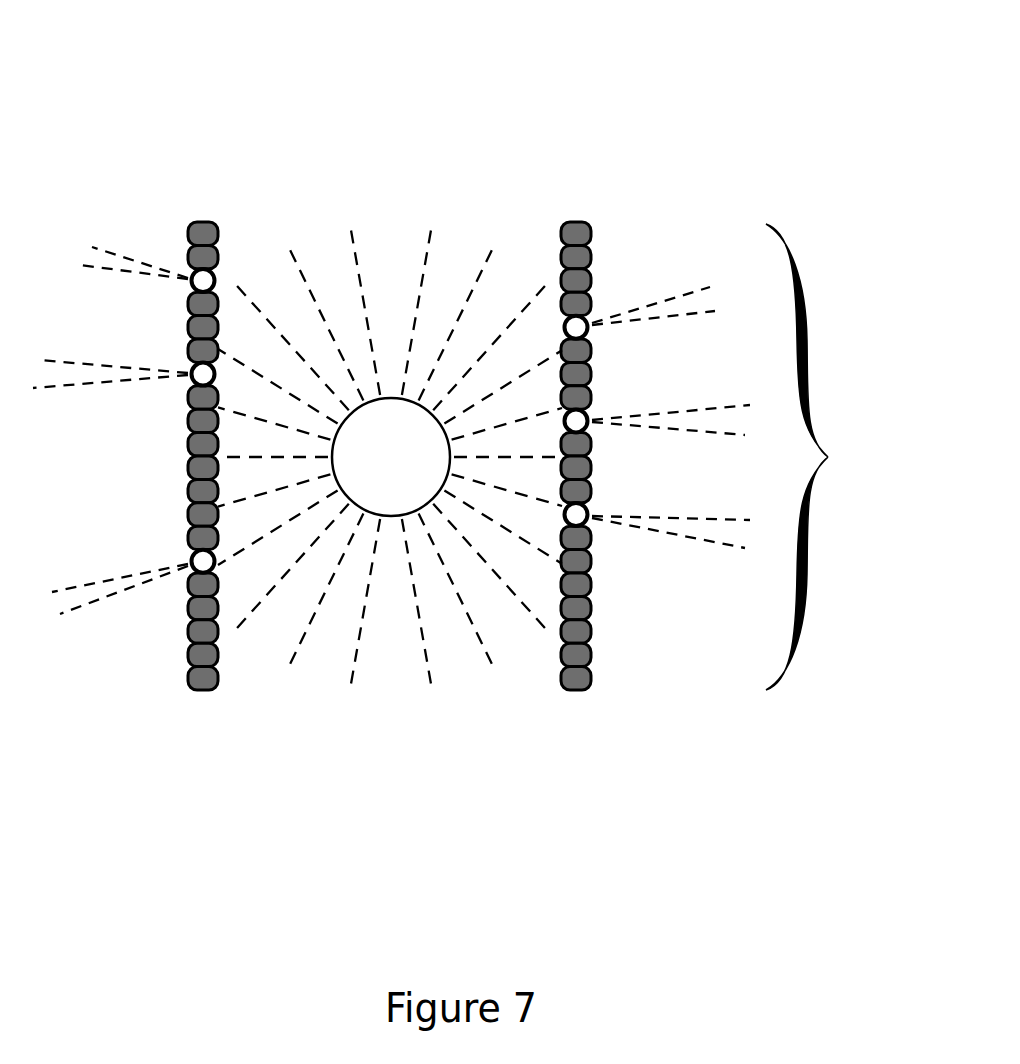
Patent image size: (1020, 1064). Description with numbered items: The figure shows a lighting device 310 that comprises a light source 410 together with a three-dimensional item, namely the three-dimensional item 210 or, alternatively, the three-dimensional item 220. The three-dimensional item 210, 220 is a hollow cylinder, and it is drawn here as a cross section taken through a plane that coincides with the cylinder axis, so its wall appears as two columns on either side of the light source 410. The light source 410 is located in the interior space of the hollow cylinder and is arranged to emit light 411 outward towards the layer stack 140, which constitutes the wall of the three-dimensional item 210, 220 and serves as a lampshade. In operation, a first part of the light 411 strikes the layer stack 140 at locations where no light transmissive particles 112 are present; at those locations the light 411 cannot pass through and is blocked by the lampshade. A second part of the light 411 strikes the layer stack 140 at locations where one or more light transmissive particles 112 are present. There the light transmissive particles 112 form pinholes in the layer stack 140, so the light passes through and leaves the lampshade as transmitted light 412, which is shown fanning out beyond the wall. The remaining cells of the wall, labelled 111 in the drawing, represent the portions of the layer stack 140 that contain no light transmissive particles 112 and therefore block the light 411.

The lighting device 310 is at (158, 118).
The pixel of first image sensor 111 is at (205, 492).
The light transmissive particles 112 is at (200, 560).
The 3D item 210 is at (573, 222).
The 3D item 220 is at (576, 456).
The light source 410 is at (422, 472).
The light 411 is at (350, 232).
The transmitted light 412 is at (712, 288).
The layer stack 140 is at (828, 457).